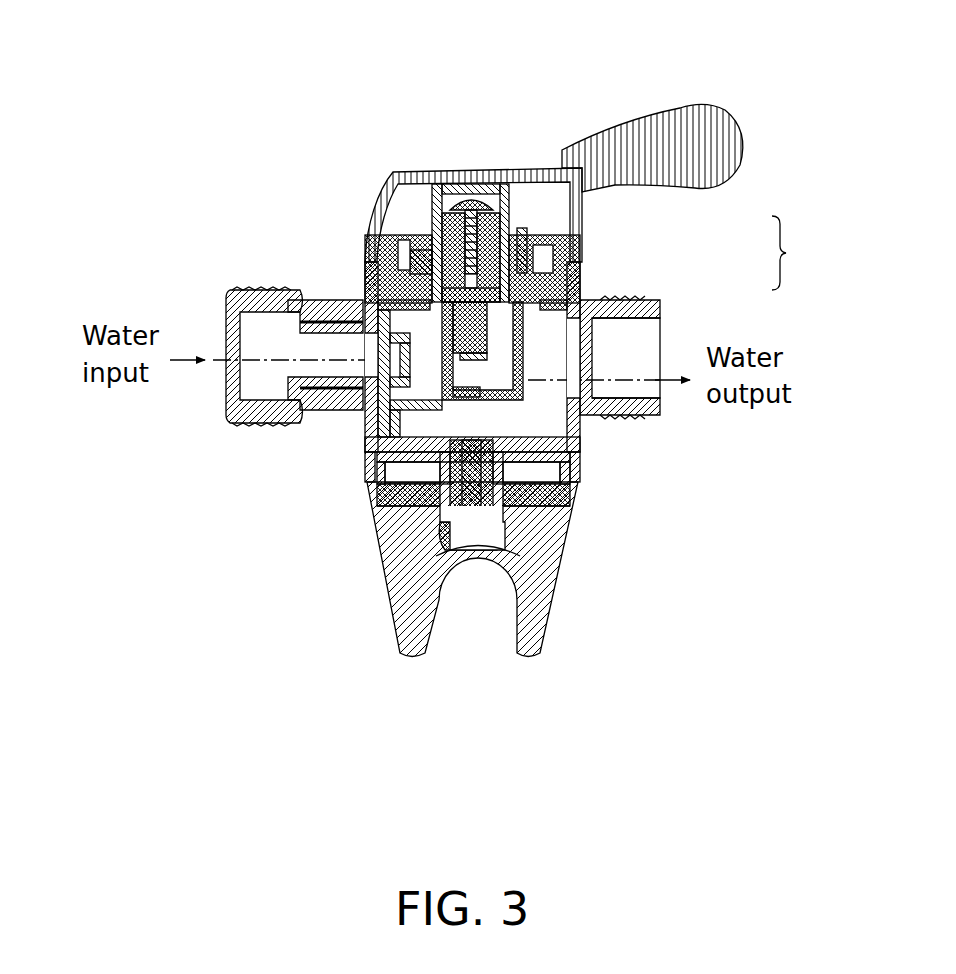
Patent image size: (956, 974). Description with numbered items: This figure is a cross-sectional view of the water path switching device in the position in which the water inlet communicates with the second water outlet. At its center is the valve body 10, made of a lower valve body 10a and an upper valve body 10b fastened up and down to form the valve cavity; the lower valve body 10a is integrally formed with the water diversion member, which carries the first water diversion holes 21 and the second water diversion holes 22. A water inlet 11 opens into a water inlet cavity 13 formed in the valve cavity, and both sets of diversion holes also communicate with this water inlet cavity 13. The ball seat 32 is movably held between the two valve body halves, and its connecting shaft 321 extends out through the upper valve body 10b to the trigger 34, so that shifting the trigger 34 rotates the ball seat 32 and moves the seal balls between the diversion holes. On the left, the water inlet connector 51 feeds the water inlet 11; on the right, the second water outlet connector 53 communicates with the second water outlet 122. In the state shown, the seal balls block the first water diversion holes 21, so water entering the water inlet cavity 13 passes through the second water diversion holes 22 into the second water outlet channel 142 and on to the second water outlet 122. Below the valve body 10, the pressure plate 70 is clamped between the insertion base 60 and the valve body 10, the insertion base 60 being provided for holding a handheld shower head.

The valve body 10 is at (792, 253).
The lower valve body 10a is at (587, 303).
The upper valve body 10b is at (575, 260).
The water inlet 11 is at (383, 337).
The water inlet cavity 13 is at (383, 413).
The first water diversion holes 21 is at (505, 400).
The second water diversion holes 22 is at (372, 478).
The ball seat 32 is at (437, 255).
The connecting shaft 321 is at (448, 232).
The trigger 34 is at (588, 152).
The water inlet connector 51 is at (256, 294).
The second water outlet connector 53 is at (640, 412).
The insertion base 60 is at (392, 562).
The pressure plate 70 is at (392, 512).
The second water outlet 122 is at (558, 382).
The second water outlet channel 142 is at (497, 424).